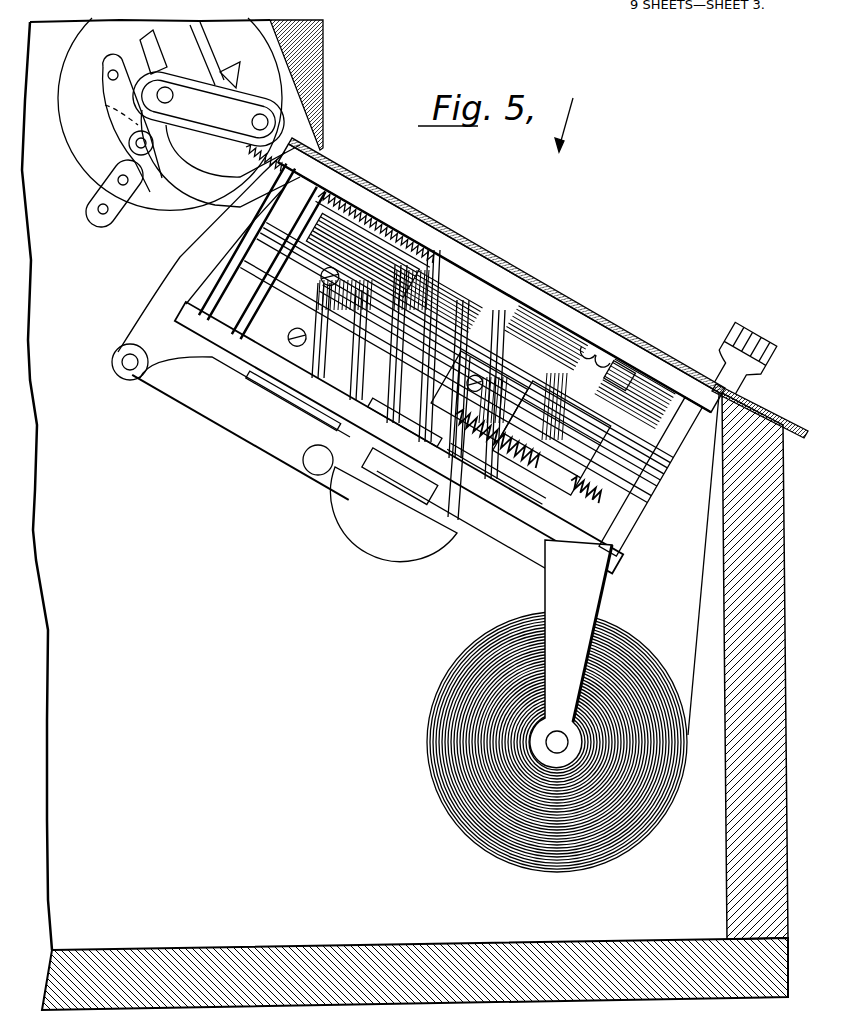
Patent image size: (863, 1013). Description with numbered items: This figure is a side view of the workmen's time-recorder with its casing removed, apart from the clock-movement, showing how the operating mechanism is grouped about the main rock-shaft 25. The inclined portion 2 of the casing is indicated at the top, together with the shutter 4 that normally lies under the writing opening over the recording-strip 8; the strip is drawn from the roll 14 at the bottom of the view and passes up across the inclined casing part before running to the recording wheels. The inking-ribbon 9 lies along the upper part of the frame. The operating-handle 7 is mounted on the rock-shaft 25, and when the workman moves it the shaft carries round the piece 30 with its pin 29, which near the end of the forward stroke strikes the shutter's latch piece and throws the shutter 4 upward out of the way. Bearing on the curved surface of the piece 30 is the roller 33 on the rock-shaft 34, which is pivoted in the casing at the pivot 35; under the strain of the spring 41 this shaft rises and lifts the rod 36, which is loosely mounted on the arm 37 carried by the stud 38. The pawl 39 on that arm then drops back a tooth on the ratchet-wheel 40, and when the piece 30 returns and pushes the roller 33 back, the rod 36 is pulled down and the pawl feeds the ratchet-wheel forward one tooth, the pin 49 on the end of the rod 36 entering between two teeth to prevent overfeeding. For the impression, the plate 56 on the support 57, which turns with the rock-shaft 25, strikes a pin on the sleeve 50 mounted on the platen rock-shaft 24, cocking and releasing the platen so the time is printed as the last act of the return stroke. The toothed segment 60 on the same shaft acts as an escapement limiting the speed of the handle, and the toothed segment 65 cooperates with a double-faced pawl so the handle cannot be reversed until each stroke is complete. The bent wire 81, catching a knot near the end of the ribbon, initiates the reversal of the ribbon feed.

The inclined portion of the casing 2 is at (481, 264).
The shutter 4 is at (290, 113).
The operating-handle 7 is at (680, 348).
The recording-strip 8 is at (694, 574).
The inking-ribbon 9 is at (395, 218).
The roll 14 is at (636, 840).
The rock-shaft 24 is at (446, 446).
The rock-shaft 25 is at (600, 398).
The pin 29 is at (564, 345).
The piece 30 is at (604, 344).
The roller 33 is at (533, 300).
The rock-shaft 34 is at (510, 278).
The pivot 35 is at (460, 250).
The rod 36 is at (220, 158).
The arm 37 is at (126, 155).
The stud 38 is at (208, 109).
The pawl 39 is at (145, 190).
The ratchet-wheel 40 is at (149, 53).
The spring 41 is at (368, 200).
The pin 49 is at (110, 78).
The sleeve 50 is at (427, 430).
The plate 56 is at (479, 396).
The support 57 is at (528, 456).
The toothed segment 60 is at (588, 348).
The toothed segment 65 is at (480, 462).
The bent wire 81 is at (427, 232).